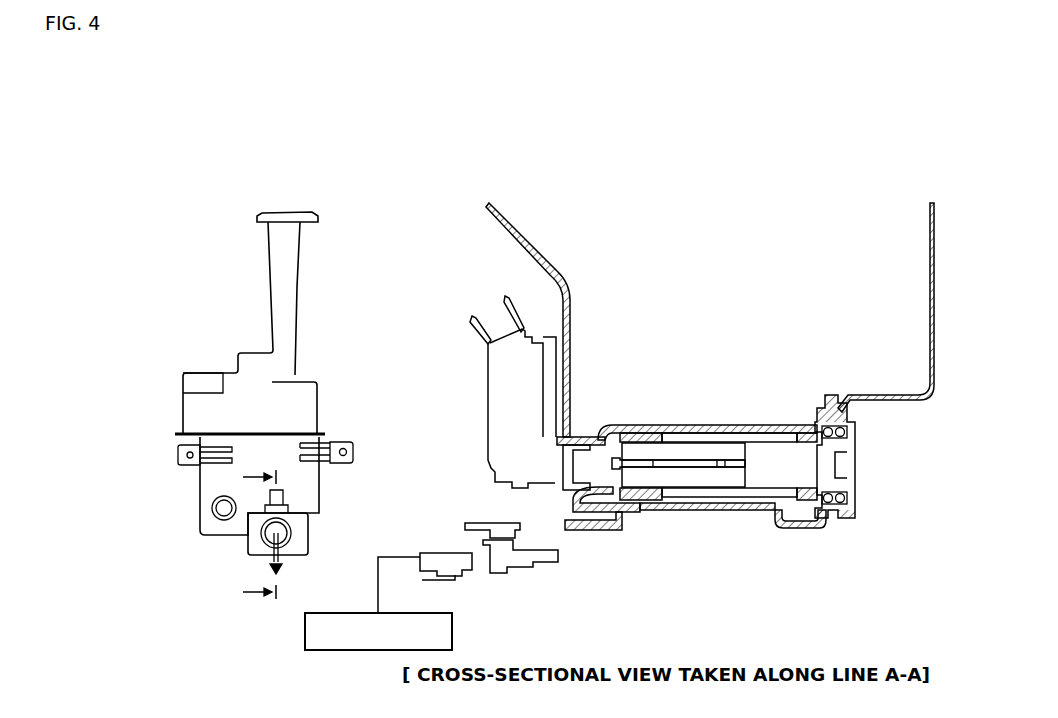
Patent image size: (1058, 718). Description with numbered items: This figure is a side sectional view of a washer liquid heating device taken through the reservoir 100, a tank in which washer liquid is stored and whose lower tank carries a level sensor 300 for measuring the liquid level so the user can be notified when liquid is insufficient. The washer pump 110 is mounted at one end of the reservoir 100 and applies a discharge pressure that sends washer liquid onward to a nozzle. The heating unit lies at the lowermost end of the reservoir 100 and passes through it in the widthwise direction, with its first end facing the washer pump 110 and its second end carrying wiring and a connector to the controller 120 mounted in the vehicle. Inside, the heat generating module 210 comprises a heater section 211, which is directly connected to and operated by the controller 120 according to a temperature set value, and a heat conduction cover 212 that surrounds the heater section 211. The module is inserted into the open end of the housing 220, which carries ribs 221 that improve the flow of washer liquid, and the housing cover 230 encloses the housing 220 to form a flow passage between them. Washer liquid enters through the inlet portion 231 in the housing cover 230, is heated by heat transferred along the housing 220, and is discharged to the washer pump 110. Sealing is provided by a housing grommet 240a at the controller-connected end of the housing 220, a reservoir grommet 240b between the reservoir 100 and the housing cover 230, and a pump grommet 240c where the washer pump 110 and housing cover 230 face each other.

The reservoir 100 is at (508, 205).
The washer pump 110 is at (487, 377).
The controller 120 is at (452, 630).
The level sensor 300 is at (212, 508).
The heat generating module 210 is at (713, 563).
The heater section 211 is at (690, 465).
The heat conduction cover 212 is at (675, 480).
The housing 220 is at (672, 430).
The ribs 221 is at (645, 428).
The housing cover 230 is at (733, 428).
The inlet portion 231 is at (800, 428).
The housing grommet 240a is at (845, 465).
The reservoir grommet 240b is at (818, 423).
The pump grommet 240c is at (575, 437).